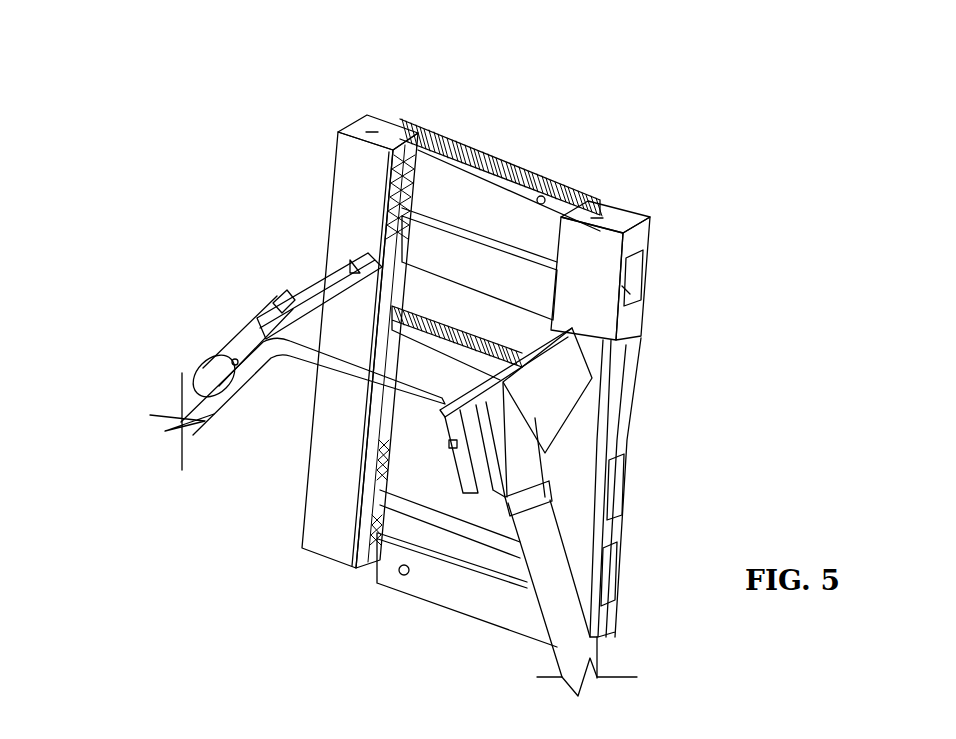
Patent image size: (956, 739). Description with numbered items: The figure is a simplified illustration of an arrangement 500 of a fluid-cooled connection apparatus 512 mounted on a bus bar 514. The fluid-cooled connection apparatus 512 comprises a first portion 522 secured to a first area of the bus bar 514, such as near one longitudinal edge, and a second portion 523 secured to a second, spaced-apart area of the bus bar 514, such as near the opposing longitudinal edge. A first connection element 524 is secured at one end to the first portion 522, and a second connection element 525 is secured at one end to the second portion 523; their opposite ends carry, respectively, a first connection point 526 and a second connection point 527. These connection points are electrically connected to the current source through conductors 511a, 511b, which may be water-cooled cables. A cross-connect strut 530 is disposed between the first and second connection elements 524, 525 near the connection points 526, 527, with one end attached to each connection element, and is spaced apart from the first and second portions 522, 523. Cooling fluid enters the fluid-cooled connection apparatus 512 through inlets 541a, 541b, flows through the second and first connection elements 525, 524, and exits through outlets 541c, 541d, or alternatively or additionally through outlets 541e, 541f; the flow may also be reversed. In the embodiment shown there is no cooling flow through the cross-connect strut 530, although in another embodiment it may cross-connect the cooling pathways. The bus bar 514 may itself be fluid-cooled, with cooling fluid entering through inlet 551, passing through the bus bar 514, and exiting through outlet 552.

The arrangement 500 is at (132, 90).
The fluid-cooled connection apparatus 512 is at (172, 204).
The bus bar 514 is at (448, 606).
The first portion 522 is at (336, 131).
The second portion 523 is at (612, 255).
The first connection element 524 is at (311, 265).
The second connection element 525 is at (568, 433).
The first connection point 526 is at (272, 298).
The second connection point 527 is at (505, 414).
The cross-connect strut 530 is at (310, 374).
The conductor 511a is at (598, 642).
The conductor 511b is at (160, 417).
The inlet 541a is at (436, 445).
The inlet 541b is at (233, 378).
The outlet 541c is at (625, 290).
The outlet 541d is at (357, 264).
The outlet 541e is at (598, 204).
The outlet 541f is at (373, 117).
The inlet 551 is at (400, 575).
The outlet 552 is at (507, 197).